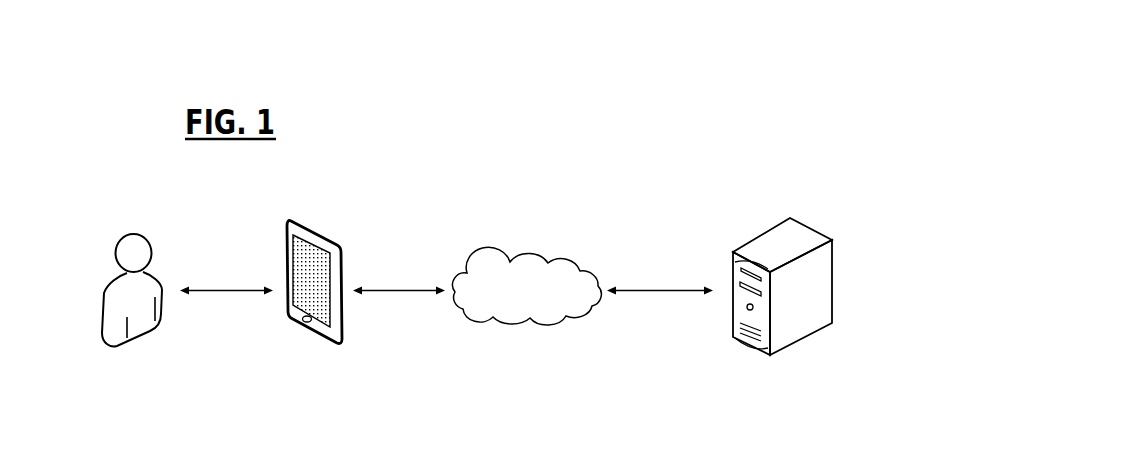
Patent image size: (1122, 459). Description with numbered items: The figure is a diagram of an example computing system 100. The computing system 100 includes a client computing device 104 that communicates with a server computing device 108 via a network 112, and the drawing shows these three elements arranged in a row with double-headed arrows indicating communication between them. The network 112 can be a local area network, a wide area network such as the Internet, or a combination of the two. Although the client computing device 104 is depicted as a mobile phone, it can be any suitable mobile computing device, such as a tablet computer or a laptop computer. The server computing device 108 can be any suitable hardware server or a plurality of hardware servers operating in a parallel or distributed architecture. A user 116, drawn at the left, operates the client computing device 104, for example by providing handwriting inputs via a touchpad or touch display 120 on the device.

The computing system 100 is at (803, 108).
The client computing device 104 is at (342, 343).
The server computing device 108 is at (832, 272).
The network 112 is at (528, 321).
The user 116 is at (132, 234).
The touch display 120 is at (310, 253).